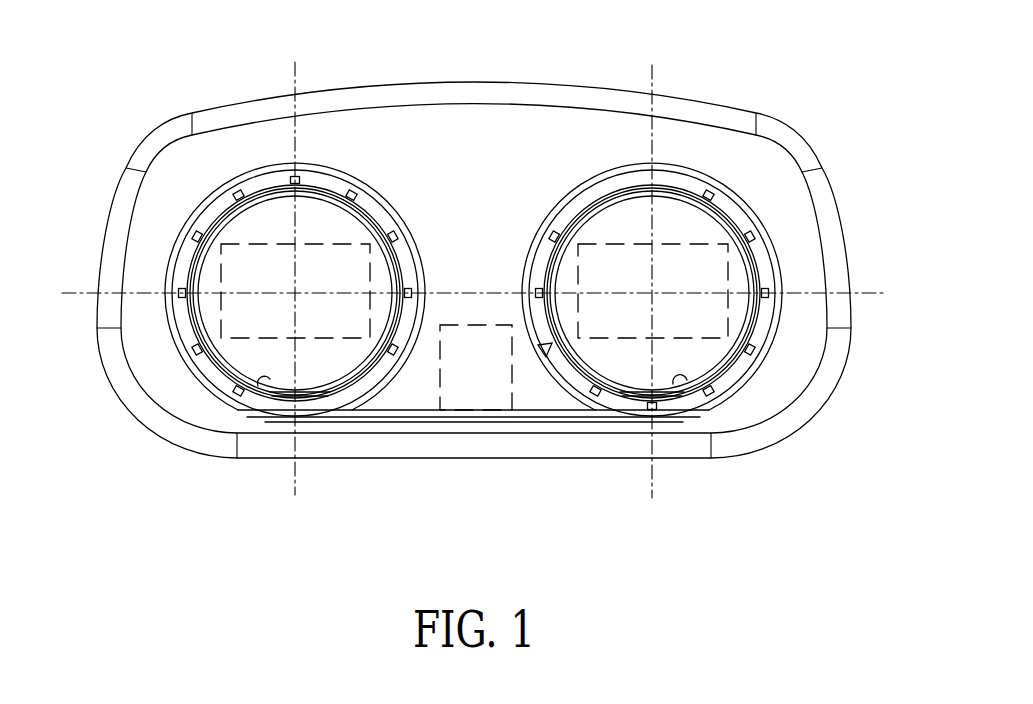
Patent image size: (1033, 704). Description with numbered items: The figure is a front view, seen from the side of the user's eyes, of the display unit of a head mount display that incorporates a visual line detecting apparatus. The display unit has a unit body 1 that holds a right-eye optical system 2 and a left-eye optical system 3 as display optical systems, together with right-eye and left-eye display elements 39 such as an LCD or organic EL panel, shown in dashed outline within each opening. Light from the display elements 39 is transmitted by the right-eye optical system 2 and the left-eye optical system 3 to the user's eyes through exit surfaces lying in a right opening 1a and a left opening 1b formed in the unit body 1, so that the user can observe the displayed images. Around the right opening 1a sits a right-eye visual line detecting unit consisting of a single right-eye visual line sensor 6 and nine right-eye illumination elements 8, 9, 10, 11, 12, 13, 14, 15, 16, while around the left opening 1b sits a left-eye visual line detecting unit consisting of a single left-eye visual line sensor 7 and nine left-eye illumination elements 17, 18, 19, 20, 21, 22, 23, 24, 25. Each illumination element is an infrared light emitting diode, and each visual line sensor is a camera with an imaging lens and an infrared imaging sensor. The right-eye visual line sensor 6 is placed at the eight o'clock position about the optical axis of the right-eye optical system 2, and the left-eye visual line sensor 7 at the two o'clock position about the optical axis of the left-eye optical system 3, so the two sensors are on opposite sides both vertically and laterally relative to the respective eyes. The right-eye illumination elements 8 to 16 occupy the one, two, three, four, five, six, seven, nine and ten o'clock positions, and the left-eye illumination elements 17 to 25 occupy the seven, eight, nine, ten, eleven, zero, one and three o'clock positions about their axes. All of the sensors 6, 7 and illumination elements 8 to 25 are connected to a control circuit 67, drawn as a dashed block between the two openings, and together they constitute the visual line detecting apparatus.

The unit body 1 is at (438, 163).
The right opening 1a is at (684, 382).
The left opening 1b is at (265, 387).
The right-eye optical system 2 is at (625, 380).
The left-eye optical system 3 is at (318, 358).
The right-eye visual line sensor 6 is at (545, 352).
The left-eye visual line sensor 7 is at (392, 235).
The right-eye illumination element 8 is at (709, 193).
The right-eye illumination element 9 is at (750, 237).
The right-eye illumination element 10 is at (765, 292).
The right-eye illumination element 11 is at (750, 350).
The right-eye illumination element 12 is at (710, 393).
The right-eye illumination element 13 is at (650, 405).
The right-eye illumination element 14 is at (597, 390).
The right-eye illumination element 15 is at (540, 293).
The right-eye illumination element 16 is at (555, 237).
The left-eye illumination element 17 is at (232, 392).
The left-eye illumination element 18 is at (195, 348).
The left-eye illumination element 19 is at (178, 292).
The left-eye illumination element 20 is at (195, 235).
The left-eye illumination element 21 is at (237, 193).
The left-eye illumination element 22 is at (293, 180).
The left-eye illumination element 23 is at (350, 195).
The left-eye illumination element 24 is at (410, 298).
The left-eye illumination element 25 is at (392, 350).
The display element 39 is at (267, 243).
The control circuit 67 is at (476, 413).